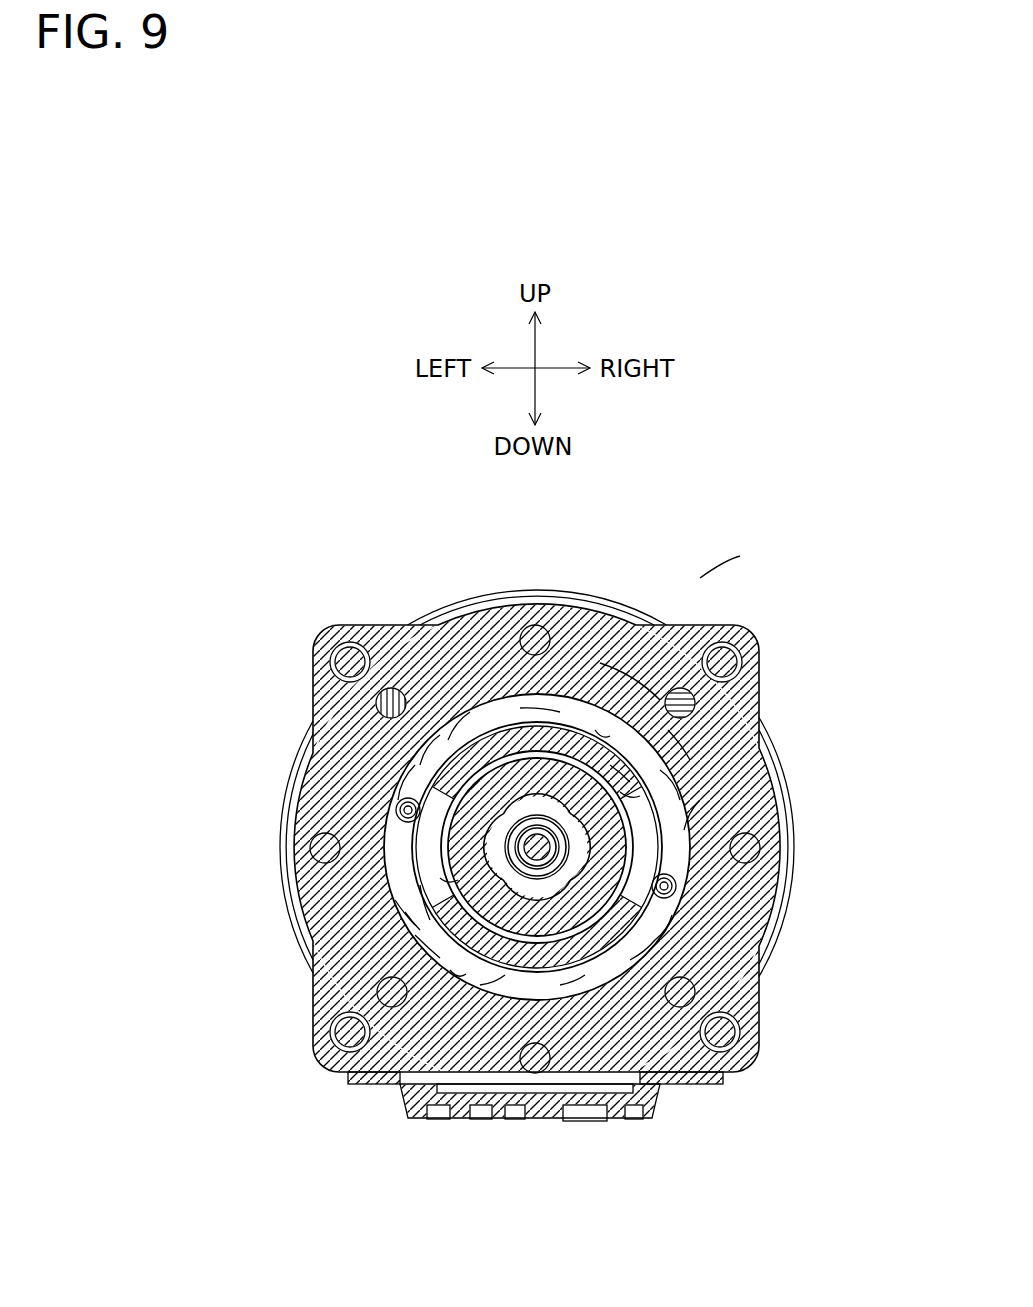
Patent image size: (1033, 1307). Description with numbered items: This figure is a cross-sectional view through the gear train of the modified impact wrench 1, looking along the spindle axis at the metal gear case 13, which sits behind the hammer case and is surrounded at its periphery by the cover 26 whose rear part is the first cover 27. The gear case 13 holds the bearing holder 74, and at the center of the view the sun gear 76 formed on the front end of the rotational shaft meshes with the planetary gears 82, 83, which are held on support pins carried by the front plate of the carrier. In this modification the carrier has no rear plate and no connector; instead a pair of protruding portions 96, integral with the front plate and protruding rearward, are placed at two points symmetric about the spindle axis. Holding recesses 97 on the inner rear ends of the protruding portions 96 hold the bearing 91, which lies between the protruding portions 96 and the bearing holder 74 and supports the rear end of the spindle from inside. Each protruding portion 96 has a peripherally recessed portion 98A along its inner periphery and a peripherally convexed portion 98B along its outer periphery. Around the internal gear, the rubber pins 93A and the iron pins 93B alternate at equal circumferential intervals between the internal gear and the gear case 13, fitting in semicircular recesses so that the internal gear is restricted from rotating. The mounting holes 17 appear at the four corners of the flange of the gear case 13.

The impact wrench 1 is at (711, 574).
The gear case 13 is at (487, 695).
The mounting bolt holes 17 is at (340, 662).
The cover 26 is at (606, 596).
The first cover 27 is at (621, 602).
The bearing holder 74 is at (668, 625).
The sun gear 76 is at (592, 856).
The planetary gear 82 is at (537, 808).
The planetary gear 83 is at (447, 737).
The bearing 91 is at (648, 630).
The pin 93A is at (391, 700).
The pin 93B is at (535, 640).
The protruding portion 96 is at (625, 775).
The holding recess 97 is at (640, 752).
The peripherally recessed portion 98A is at (630, 798).
The peripherally convexed portion 98B is at (602, 735).